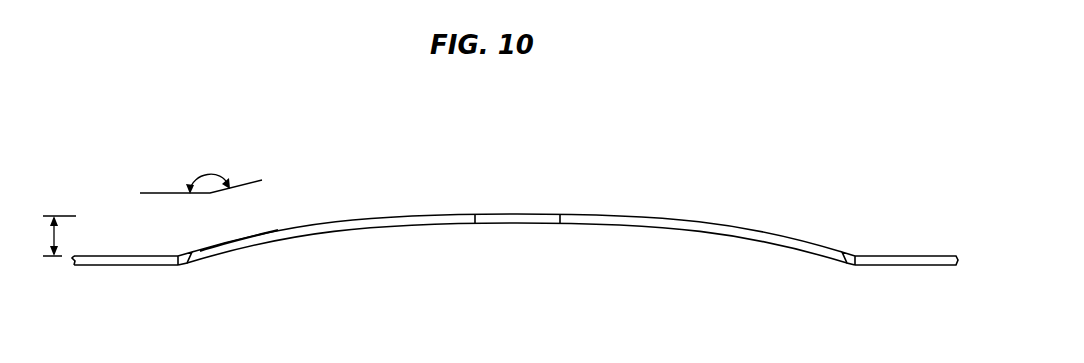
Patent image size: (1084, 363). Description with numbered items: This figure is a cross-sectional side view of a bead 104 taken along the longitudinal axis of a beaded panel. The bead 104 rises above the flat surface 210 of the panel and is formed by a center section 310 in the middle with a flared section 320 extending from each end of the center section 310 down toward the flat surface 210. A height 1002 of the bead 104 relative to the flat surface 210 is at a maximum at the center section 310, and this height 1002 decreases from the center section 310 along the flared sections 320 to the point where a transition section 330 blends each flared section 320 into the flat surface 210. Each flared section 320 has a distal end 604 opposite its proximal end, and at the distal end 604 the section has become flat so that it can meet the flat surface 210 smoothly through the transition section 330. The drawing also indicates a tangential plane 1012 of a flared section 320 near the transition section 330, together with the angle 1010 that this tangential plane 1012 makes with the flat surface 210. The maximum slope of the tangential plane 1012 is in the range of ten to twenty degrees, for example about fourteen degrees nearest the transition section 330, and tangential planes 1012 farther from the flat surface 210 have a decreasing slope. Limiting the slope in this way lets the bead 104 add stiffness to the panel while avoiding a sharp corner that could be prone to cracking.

The bead 104 is at (691, 92).
The flat surface 210 is at (110, 255).
The center section 310 is at (520, 212).
The flared section 320 is at (392, 215).
The transition section 330 is at (183, 267).
The distal end 604 is at (219, 269).
The height 1002 is at (58, 234).
The angle 1010 is at (191, 186).
The tangential plane 1012 is at (266, 232).